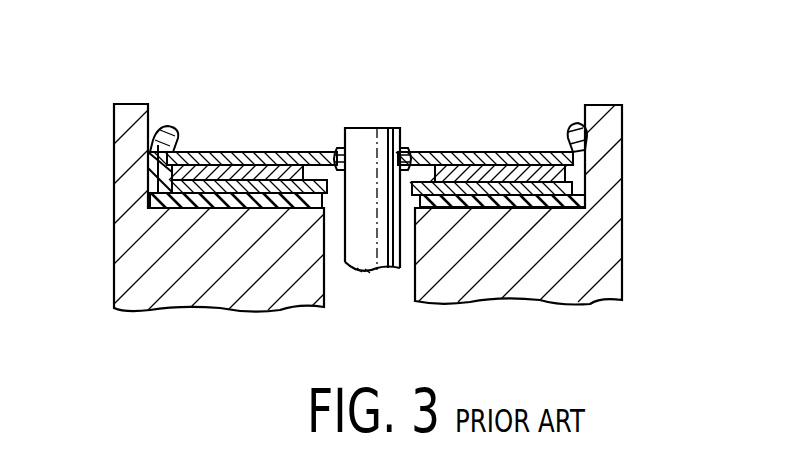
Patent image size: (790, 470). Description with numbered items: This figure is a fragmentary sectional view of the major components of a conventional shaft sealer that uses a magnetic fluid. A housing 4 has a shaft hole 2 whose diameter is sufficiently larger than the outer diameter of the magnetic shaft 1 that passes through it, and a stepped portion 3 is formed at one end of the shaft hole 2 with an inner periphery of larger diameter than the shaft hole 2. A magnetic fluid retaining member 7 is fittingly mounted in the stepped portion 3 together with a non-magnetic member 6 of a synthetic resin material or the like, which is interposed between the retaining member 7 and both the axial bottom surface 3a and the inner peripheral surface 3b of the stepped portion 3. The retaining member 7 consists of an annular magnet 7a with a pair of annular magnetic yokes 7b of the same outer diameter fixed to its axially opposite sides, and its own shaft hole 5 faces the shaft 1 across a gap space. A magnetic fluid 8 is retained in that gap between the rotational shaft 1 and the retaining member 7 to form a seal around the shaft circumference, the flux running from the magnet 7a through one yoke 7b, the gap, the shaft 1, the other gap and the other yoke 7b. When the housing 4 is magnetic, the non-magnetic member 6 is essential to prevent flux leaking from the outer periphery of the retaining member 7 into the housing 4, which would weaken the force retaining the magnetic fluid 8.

The magnetic shaft 1 is at (400, 130).
The shaft hole 2 is at (373, 278).
The stepped portion 3 is at (577, 122).
The axial bottom surface 3a is at (495, 208).
The inner peripheral surface 3b is at (575, 155).
The housing 4 is at (593, 255).
The shaft hole of the retaining member 5 is at (405, 190).
The non-magnetic member 6 is at (580, 192).
The magnetic fluid retaining member 7 is at (297, 140).
The annular magnet 7a is at (220, 168).
The annular magnetic yokes 7b is at (252, 152).
The magnetic fluid 8 is at (340, 148).